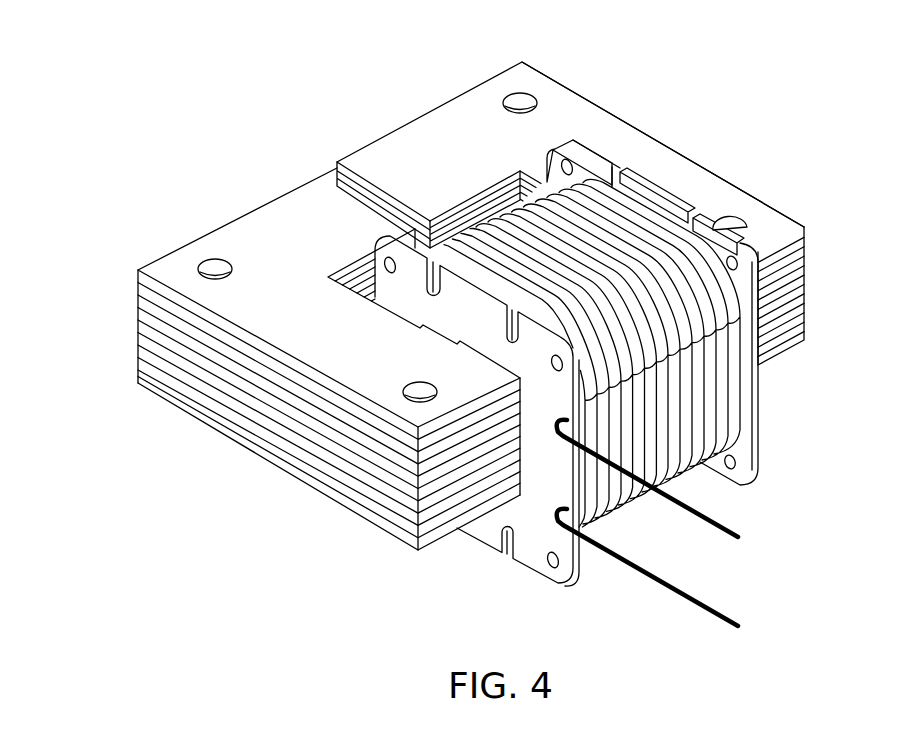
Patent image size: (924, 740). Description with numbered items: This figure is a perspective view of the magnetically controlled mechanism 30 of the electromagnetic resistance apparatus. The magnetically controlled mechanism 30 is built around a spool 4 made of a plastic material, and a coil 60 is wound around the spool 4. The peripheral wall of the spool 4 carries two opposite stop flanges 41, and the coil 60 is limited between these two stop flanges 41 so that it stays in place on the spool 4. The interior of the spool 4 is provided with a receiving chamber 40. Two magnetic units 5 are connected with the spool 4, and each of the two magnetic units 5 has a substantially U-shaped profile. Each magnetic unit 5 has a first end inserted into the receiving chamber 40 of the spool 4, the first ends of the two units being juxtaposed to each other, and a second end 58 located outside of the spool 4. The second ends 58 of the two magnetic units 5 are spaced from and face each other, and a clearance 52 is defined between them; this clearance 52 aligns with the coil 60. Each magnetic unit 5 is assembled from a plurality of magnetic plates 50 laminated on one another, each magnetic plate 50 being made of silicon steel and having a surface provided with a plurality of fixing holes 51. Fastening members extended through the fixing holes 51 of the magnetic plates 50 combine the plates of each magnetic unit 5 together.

The spool 4 is at (779, 462).
The magnetic unit 5 is at (827, 264).
The magnetically controlled mechanism 30 is at (770, 152).
The receiving chamber 40 is at (522, 447).
The stop flange 41 is at (533, 552).
The magnetic plate 50 is at (652, 160).
The fixing hole 51 is at (200, 266).
The clearance 52 is at (328, 158).
The second end 58 is at (460, 133).
The coil 60 is at (718, 395).